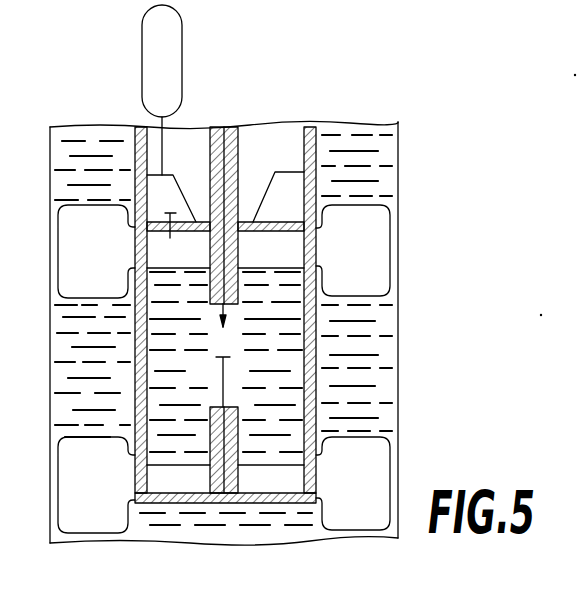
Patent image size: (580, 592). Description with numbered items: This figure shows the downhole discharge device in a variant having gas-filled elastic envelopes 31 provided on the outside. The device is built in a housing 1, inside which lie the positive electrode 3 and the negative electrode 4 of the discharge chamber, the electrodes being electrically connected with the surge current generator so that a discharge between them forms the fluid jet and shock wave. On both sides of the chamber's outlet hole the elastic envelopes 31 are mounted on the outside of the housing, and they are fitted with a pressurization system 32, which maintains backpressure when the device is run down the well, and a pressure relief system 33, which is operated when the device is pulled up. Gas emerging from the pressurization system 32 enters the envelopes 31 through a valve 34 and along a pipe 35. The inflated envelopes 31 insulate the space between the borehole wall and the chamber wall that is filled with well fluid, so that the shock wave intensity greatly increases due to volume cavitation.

The housing 1 is at (316, 130).
The positive electrode 3 is at (238, 158).
The negative electrode 4 is at (238, 437).
The gas-filled elastic envelopes 31 is at (380, 223).
The pressurization system 32 is at (174, 190).
The pressure relief system 33 is at (146, 78).
The valve 34 is at (172, 236).
The pipe 35 is at (137, 373).